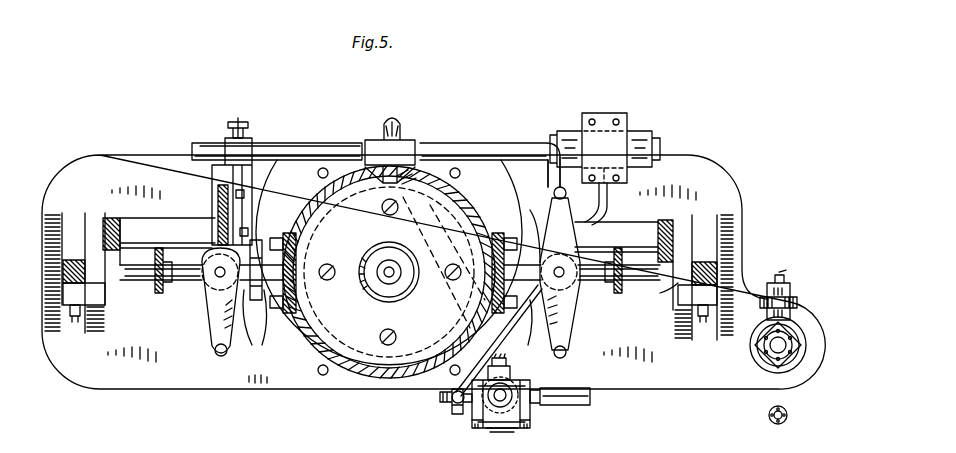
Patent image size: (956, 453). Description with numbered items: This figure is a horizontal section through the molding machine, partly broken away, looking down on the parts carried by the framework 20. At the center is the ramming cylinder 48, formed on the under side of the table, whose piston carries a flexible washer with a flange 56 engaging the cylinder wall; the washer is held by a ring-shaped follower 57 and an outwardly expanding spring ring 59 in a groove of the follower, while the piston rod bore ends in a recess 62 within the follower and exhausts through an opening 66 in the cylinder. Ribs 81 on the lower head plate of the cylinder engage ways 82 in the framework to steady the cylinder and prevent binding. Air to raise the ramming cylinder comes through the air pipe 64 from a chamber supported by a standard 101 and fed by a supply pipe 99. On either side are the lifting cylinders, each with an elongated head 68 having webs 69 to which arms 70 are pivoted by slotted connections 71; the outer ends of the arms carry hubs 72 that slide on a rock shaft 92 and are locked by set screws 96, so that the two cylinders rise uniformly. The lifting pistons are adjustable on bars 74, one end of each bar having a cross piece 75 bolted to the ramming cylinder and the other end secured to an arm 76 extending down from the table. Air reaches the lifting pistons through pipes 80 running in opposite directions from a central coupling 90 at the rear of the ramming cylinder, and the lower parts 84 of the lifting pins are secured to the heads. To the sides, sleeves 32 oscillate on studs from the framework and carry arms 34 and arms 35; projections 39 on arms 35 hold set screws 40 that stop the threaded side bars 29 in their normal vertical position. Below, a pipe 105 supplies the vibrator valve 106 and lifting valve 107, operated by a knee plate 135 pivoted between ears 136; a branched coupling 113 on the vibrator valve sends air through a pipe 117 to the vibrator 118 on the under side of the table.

The framework 20 is at (106, 328).
The threaded side bars 29 is at (75, 258).
The sleeves 32 is at (389, 241).
The arms 34 is at (113, 218).
The arms 35 is at (370, 294).
The projections 39 is at (80, 340).
The set screws 40 is at (76, 322).
The ramming cylinder 48 is at (322, 197).
The flange 56 is at (342, 193).
The ring-shaped follower 57 is at (411, 263).
The spring ring 59 is at (318, 234).
The recess 62 is at (406, 292).
The air pipe 64 is at (778, 424).
The opening 66 is at (400, 162).
The elongated head 68 is at (212, 318).
The webs 69 is at (218, 207).
The arms 70 is at (244, 194).
The slotted connections 71 is at (243, 230).
The hubs 72 is at (226, 142).
The bars 74 is at (192, 280).
The cross piece 75 is at (250, 338).
The arm 76 is at (158, 284).
The pipes 80 is at (317, 146).
The ribs 81 is at (266, 267).
The ways 82 is at (530, 265).
The lower parts of the lifting pins 84 is at (215, 353).
The central coupling 90 is at (378, 142).
The rock shaft 92 is at (270, 152).
The set screws 96 is at (240, 121).
The pipe 99 is at (780, 276).
The standard 101 is at (762, 358).
The pipe 105 is at (565, 402).
The vibrator valve 106 is at (482, 414).
The lifting valve 107 is at (522, 376).
The branched coupling 113 is at (442, 401).
The pipe 117 is at (520, 322).
The vibrator 118 is at (605, 148).
The knee plate 135 is at (522, 437).
The ears 136 is at (478, 430).